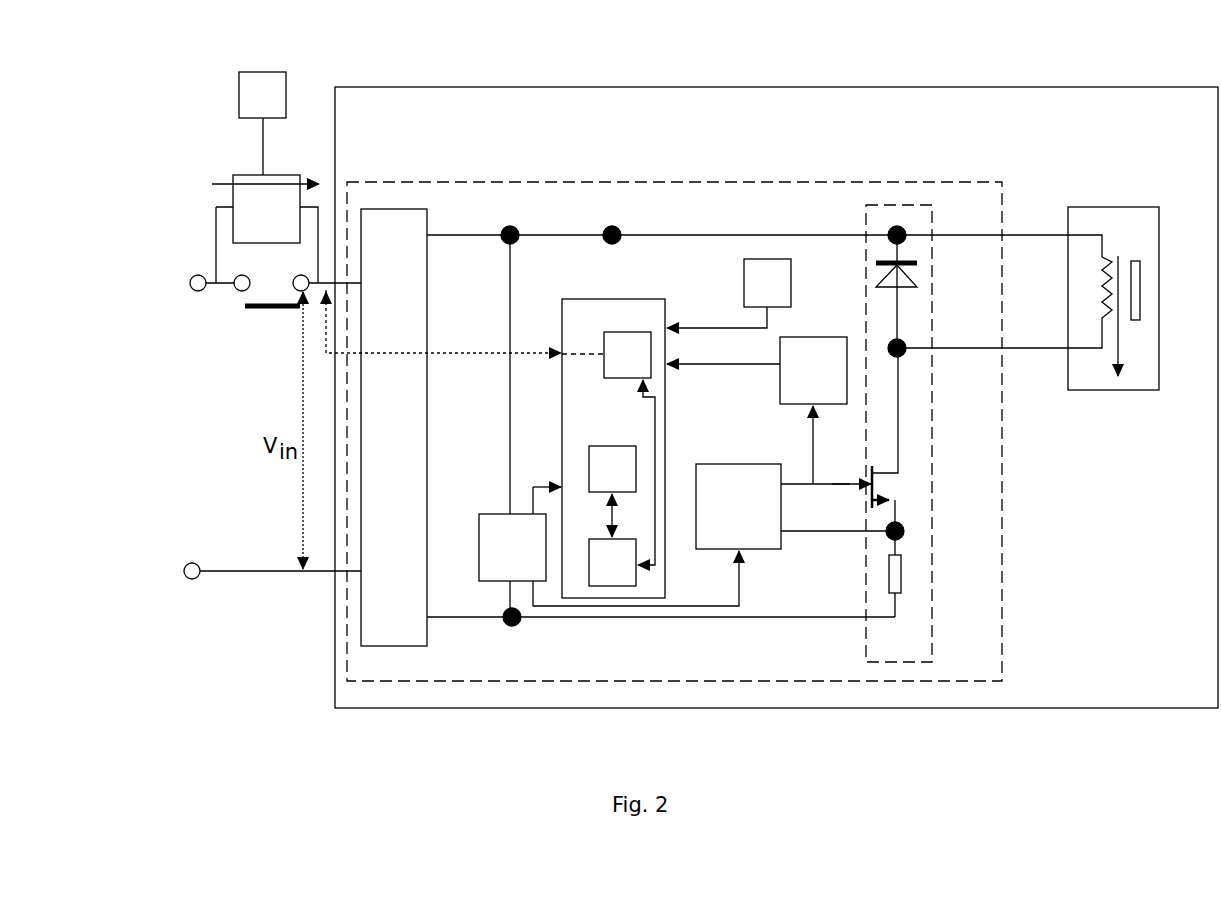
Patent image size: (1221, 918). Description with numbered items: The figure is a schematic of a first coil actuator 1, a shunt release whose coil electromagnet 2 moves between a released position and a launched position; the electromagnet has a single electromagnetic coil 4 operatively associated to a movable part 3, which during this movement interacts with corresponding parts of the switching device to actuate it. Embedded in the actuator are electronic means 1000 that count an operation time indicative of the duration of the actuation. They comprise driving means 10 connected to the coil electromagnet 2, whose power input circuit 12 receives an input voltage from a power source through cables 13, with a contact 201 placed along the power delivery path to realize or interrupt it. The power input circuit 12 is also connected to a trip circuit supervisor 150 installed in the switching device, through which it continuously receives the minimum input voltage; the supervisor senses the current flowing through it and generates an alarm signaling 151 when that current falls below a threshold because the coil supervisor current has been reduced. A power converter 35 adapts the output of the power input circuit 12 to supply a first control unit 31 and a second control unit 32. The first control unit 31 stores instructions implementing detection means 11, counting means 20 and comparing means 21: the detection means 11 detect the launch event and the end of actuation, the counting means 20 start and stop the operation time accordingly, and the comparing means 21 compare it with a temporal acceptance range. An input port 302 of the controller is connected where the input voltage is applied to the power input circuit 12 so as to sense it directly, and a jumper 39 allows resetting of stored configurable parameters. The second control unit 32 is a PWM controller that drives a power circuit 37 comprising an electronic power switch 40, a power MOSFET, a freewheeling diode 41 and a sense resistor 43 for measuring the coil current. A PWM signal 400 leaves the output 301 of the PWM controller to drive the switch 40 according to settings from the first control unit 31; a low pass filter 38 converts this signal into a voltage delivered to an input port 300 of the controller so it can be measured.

The coil actuator 1 is at (641, 86).
The coil electromagnet 2 is at (1112, 205).
The movable part 3 is at (1143, 290).
The electromagnetic coil 4 is at (1098, 293).
The driving means 10 is at (511, 684).
The detection means 11 is at (627, 355).
The power input circuit 12 is at (391, 233).
The cables 13 is at (196, 272).
The counting means 20 is at (612, 562).
The comparing means 21 is at (612, 469).
The first control unit 31 is at (559, 333).
The second control unit 32 is at (738, 506).
The power converter 35 is at (512, 547).
The power circuit 37 is at (869, 214).
The low pass filter 38 is at (813, 370).
The jumper 39 is at (729, 293).
The electronic power switch 40 is at (899, 487).
The freewheeling diode 41 is at (913, 281).
The sense resistor 43 is at (904, 578).
The trip circuit supervisor 150 is at (273, 219).
The alarm signaling 151 is at (262, 123).
The contact 201 is at (268, 312).
The input port 300 is at (670, 368).
The output 301 is at (784, 481).
The input port 302 is at (560, 355).
The PWM signal 400 is at (846, 472).
The electronic means 1000 is at (1036, 592).